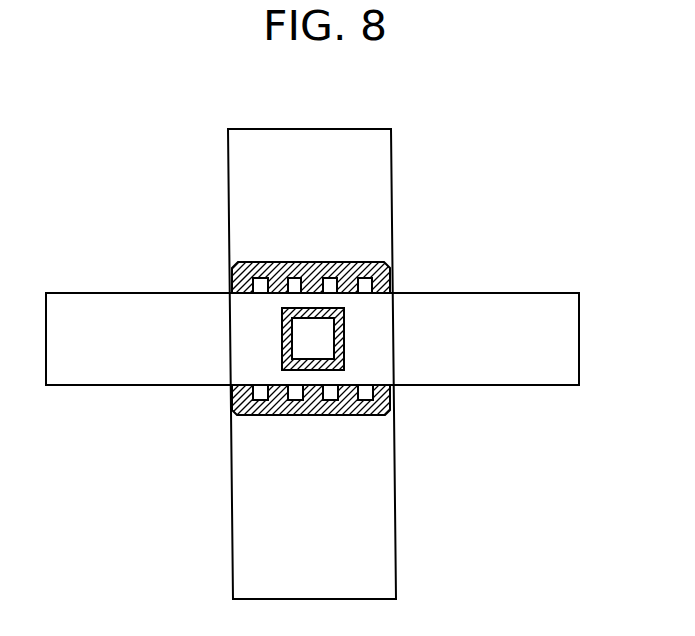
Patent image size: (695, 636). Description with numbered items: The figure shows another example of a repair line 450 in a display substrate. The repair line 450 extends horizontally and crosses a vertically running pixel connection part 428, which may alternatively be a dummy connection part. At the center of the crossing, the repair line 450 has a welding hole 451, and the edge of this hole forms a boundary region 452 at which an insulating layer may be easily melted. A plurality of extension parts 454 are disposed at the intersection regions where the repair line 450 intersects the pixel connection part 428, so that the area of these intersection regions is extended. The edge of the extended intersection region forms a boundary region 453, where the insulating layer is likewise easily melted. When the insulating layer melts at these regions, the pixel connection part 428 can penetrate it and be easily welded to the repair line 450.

The pixel connection part 428 is at (382, 175).
The repair line 450 is at (568, 337).
The welding hole 451 is at (307, 334).
The boundary region of the welding hole 452 is at (338, 338).
The boundary region of the intersection region 453 is at (252, 407).
The extension parts 454 is at (242, 395).